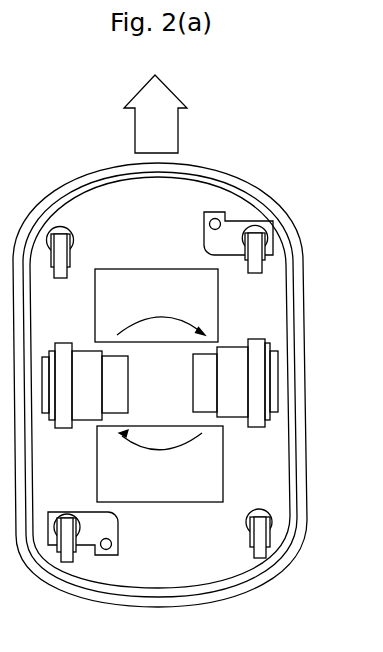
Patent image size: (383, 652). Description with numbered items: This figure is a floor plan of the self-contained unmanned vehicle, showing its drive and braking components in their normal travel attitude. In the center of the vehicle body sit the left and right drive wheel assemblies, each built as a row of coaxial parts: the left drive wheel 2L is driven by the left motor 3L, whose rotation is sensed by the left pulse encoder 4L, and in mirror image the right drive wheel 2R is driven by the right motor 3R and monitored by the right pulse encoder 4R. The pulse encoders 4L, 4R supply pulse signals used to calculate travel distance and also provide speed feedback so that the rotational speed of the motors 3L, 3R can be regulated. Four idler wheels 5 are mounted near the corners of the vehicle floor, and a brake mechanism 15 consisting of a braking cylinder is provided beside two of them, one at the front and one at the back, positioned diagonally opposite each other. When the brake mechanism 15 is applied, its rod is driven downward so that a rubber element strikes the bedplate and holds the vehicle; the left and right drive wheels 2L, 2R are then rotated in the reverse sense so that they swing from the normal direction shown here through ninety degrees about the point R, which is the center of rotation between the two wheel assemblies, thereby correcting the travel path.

The idler wheel 5 is at (62, 265).
The brake mechanism 15 is at (206, 227).
The left drive wheel 2L is at (65, 425).
The left motor 3L is at (87, 416).
The left pulse encoder 4L is at (117, 377).
The right drive wheel 2R is at (259, 418).
The right motor 3R is at (239, 413).
The right pulse encoder 4R is at (200, 372).
The center of rotation R is at (160, 387).